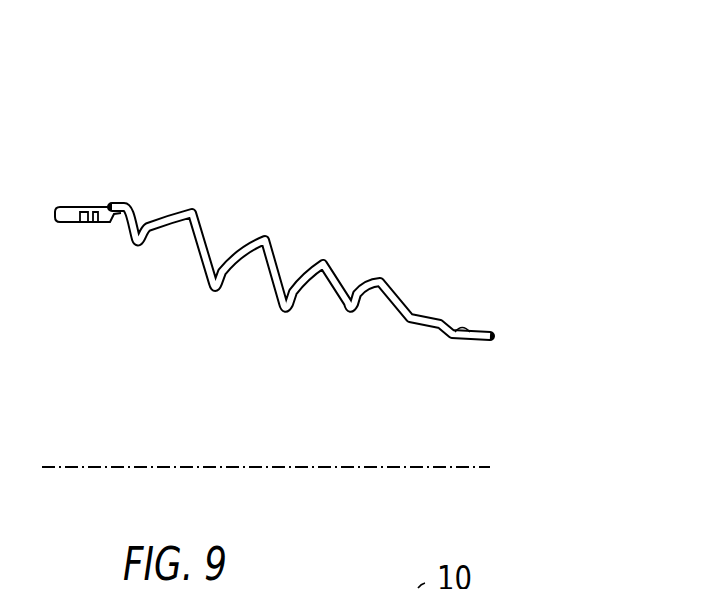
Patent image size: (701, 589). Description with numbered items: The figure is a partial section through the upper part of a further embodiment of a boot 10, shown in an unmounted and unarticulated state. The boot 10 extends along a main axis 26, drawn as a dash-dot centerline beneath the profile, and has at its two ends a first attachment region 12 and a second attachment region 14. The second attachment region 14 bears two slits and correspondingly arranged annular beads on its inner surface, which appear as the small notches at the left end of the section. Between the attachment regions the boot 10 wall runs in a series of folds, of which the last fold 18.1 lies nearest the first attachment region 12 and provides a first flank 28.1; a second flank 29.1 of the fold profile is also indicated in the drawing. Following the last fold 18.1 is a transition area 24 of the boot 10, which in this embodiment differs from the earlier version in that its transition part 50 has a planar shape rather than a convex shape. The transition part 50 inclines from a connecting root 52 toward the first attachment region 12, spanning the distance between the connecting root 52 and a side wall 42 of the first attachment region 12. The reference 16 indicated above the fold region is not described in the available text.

The boot 10 is at (349, 70).
The first attachment region 12 is at (481, 309).
The second attachment region 14 is at (88, 184).
The spring element 16 is at (269, 124).
The last fold 18.1 is at (379, 266).
The transition area 24 is at (444, 230).
The main axis 26 is at (480, 466).
The first flank 28.1 is at (396, 296).
The second flank 29.1 is at (366, 290).
The side wall 42 is at (472, 326).
The transition part 50 is at (433, 327).
The connecting root 52 is at (415, 304).